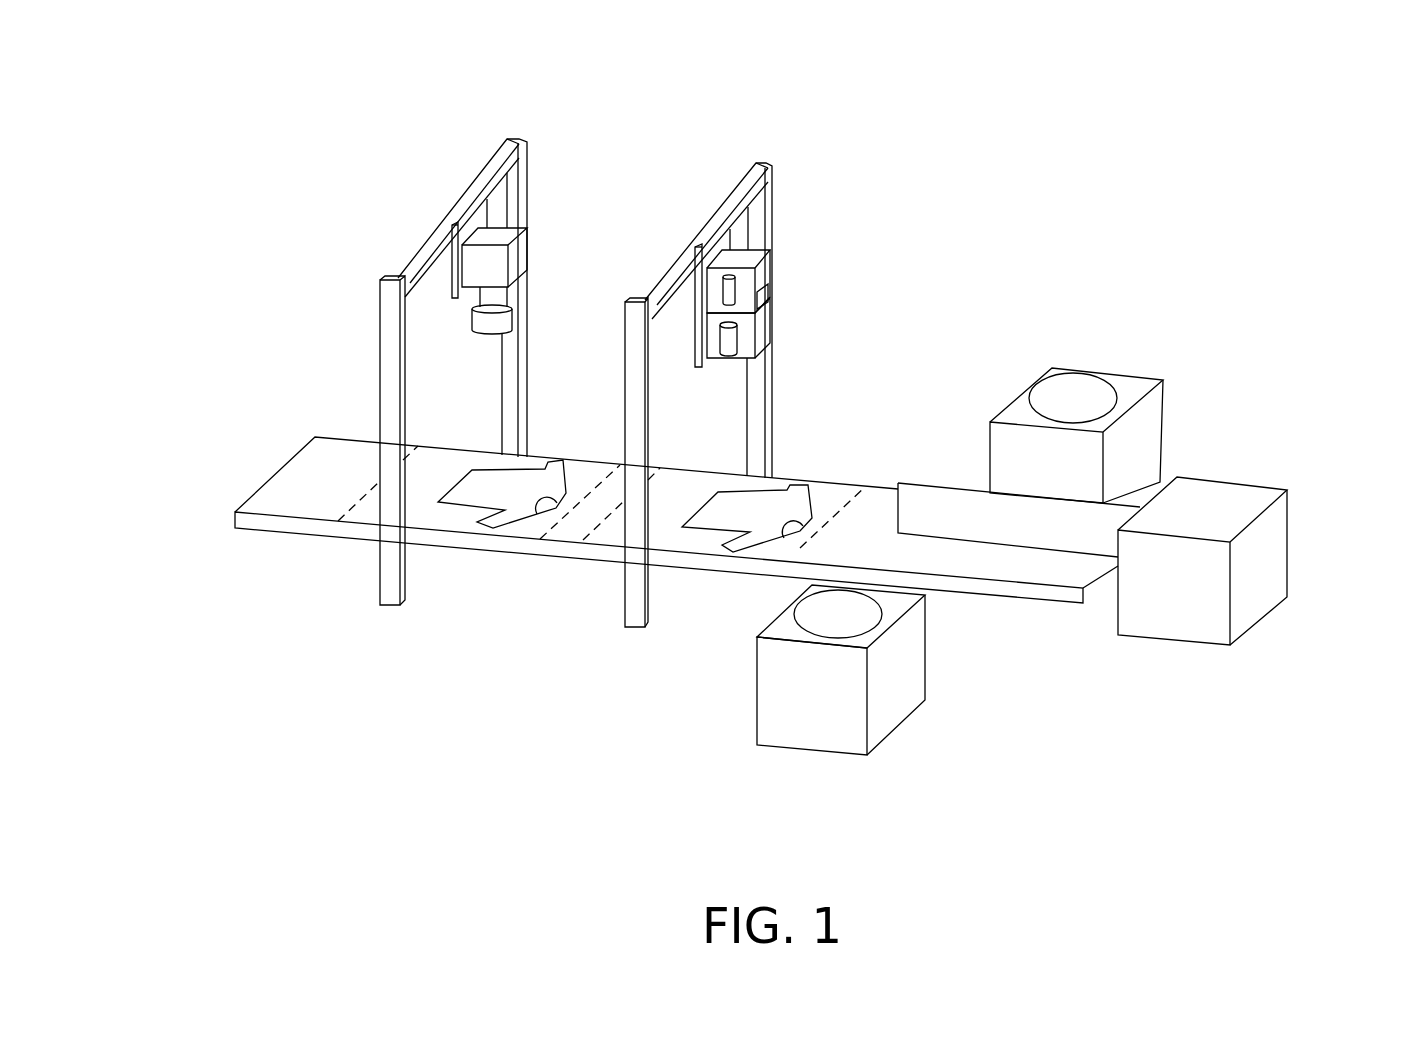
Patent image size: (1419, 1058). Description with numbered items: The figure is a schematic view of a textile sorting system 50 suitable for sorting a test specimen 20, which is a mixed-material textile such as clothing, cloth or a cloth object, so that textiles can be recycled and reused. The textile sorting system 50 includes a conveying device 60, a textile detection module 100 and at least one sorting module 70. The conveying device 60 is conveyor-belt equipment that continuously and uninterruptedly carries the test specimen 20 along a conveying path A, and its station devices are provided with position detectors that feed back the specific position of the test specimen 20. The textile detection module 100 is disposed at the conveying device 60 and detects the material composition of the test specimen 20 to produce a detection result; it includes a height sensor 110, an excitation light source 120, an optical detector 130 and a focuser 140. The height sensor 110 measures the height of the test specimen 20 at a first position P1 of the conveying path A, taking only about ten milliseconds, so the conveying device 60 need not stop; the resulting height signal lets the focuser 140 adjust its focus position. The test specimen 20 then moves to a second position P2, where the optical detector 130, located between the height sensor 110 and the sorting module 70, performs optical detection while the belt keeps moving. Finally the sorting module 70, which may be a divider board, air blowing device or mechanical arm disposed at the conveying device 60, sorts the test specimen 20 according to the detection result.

The textile detection module 100 is at (495, 339).
The height sensor 110 is at (508, 232).
The excitation light source 120 is at (769, 289).
The optical detector 130 is at (765, 270).
The focuser 140 is at (763, 329).
The test specimen 20 is at (477, 533).
The conveying device 60 is at (258, 500).
The sorting module 70 is at (1268, 550).
The textile sorting system 50 is at (1385, 773).
The first position P1 is at (557, 525).
The second position P2 is at (801, 547).
The conveying path A is at (577, 727).